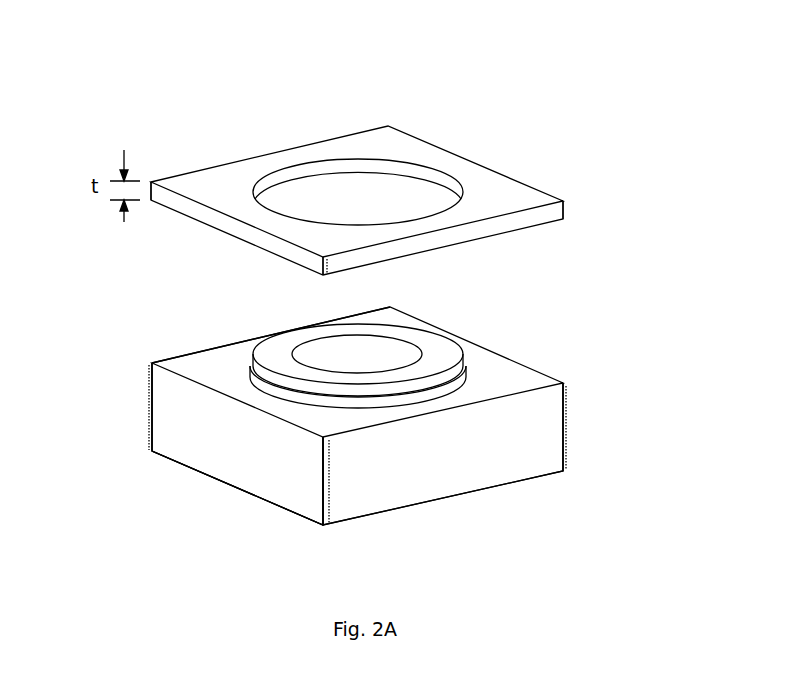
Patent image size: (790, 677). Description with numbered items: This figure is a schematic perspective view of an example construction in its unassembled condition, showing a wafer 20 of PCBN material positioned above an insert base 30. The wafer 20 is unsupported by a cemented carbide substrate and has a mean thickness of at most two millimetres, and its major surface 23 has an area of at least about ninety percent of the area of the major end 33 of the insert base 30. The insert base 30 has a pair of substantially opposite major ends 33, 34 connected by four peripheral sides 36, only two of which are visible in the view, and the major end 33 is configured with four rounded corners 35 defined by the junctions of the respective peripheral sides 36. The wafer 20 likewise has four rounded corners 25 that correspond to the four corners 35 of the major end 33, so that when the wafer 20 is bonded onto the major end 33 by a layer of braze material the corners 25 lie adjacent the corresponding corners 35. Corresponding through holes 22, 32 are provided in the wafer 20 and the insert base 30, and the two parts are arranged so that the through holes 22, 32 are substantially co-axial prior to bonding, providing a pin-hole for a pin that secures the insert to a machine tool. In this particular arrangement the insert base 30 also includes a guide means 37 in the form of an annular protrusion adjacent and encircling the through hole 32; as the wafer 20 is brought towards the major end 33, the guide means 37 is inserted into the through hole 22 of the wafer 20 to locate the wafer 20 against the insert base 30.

The wafer 20 is at (463, 162).
The through hole 22 is at (370, 196).
The major surface 23 is at (242, 165).
The corners 25 is at (150, 182).
The insert base 30 is at (473, 341).
The through hole 32 is at (373, 353).
The major end 33 is at (227, 350).
The major end 34 is at (233, 507).
The rounded corners 35 is at (152, 363).
The peripheral sides 36 is at (173, 428).
The guide means 37 is at (430, 363).